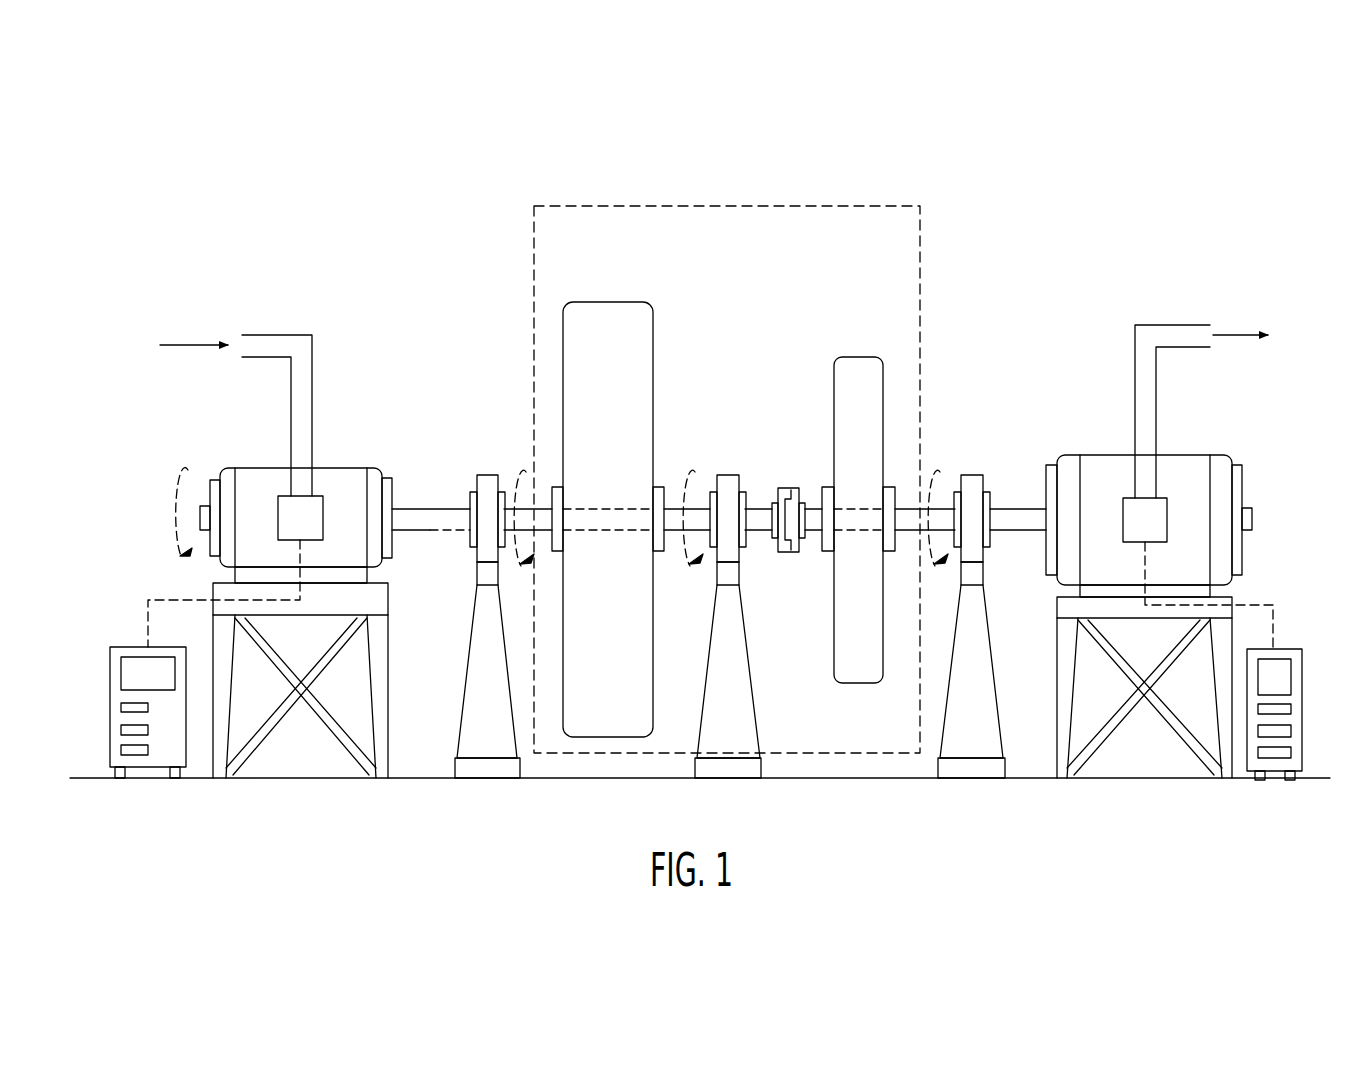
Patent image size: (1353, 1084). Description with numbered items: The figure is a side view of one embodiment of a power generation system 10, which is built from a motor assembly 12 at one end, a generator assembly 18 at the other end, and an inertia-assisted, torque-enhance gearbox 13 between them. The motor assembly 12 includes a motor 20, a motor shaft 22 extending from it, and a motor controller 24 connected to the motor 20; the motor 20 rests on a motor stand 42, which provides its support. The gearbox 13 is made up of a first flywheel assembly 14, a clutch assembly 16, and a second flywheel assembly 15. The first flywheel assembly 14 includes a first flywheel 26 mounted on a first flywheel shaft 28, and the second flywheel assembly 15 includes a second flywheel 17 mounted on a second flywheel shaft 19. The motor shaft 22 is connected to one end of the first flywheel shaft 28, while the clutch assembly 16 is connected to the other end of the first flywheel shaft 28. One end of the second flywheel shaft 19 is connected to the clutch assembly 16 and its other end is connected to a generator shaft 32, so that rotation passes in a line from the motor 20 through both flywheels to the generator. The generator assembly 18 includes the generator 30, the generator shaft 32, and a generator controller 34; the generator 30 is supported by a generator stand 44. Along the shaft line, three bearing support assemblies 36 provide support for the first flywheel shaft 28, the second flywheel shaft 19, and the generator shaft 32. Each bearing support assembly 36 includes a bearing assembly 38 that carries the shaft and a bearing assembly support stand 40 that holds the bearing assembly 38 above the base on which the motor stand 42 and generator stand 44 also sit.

The power generation system 10 is at (202, 266).
The motor assembly 12 is at (351, 432).
The inertia-assisted, torque-enhance gearbox 13 is at (528, 252).
The first flywheel assembly 14 is at (612, 296).
The second flywheel assembly 15 is at (860, 350).
The clutch assembly 16 is at (790, 482).
The second flywheel 17 is at (840, 367).
The generator assembly 18 is at (1100, 424).
The second flywheel shaft 19 is at (900, 500).
The motor 20 is at (248, 470).
The motor shaft 22 is at (433, 518).
The motor controller 24 is at (110, 732).
The first flywheel 26 is at (642, 337).
The first flywheel shaft 28 is at (545, 500).
The generator 30 is at (1188, 458).
The generator shaft 32 is at (1014, 524).
The generator controller 34 is at (1298, 698).
The bearing support assembly 36 is at (488, 468).
The bearing assembly 38 is at (471, 497).
The bearing assembly support stand 40 is at (478, 647).
The motor stand 42 is at (380, 704).
The generator stand 44 is at (1062, 707).